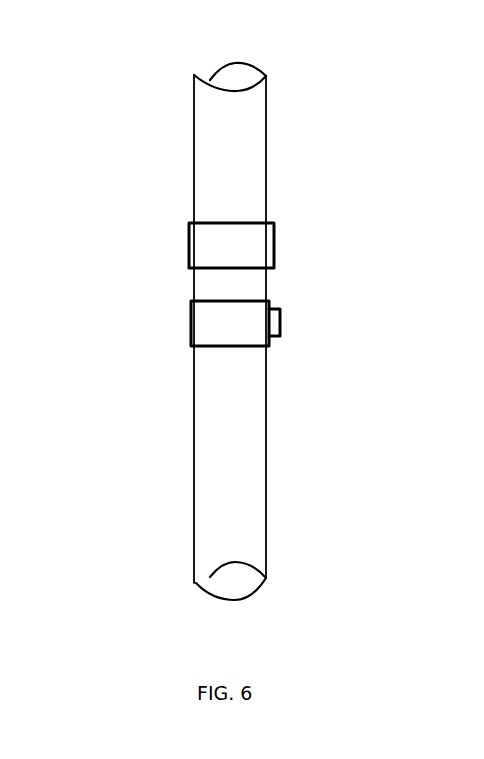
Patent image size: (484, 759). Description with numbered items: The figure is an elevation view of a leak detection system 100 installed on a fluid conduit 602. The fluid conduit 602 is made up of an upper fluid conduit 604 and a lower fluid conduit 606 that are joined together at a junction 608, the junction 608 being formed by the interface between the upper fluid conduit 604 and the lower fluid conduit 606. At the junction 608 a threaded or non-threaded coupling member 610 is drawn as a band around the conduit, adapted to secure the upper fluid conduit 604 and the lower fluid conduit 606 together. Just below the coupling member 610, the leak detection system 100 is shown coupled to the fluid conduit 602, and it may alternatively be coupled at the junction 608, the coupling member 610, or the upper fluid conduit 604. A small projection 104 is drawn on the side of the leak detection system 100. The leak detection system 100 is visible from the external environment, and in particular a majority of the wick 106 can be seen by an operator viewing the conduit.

The fluid conduit 602 is at (218, 319).
The upper fluid conduit 604 is at (221, 128).
The lower fluid conduit 606 is at (225, 456).
The junction 608 is at (199, 233).
The coupling member 610 is at (197, 239).
The leak detection system 100 is at (216, 364).
The connector tab 104 is at (281, 318).
The wick 106 is at (213, 335).